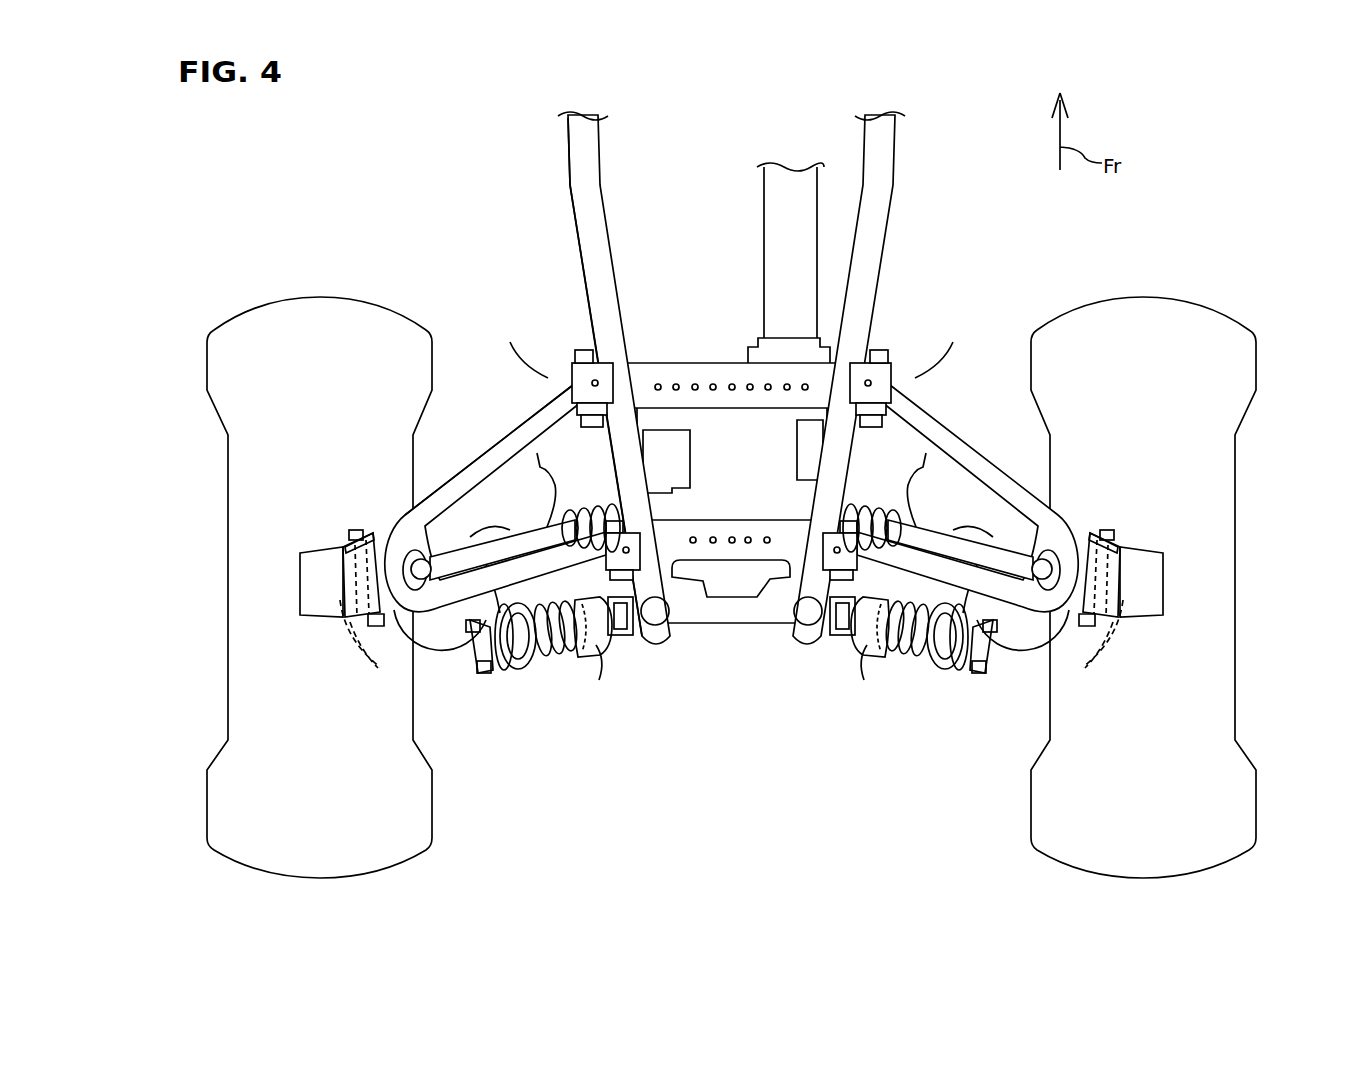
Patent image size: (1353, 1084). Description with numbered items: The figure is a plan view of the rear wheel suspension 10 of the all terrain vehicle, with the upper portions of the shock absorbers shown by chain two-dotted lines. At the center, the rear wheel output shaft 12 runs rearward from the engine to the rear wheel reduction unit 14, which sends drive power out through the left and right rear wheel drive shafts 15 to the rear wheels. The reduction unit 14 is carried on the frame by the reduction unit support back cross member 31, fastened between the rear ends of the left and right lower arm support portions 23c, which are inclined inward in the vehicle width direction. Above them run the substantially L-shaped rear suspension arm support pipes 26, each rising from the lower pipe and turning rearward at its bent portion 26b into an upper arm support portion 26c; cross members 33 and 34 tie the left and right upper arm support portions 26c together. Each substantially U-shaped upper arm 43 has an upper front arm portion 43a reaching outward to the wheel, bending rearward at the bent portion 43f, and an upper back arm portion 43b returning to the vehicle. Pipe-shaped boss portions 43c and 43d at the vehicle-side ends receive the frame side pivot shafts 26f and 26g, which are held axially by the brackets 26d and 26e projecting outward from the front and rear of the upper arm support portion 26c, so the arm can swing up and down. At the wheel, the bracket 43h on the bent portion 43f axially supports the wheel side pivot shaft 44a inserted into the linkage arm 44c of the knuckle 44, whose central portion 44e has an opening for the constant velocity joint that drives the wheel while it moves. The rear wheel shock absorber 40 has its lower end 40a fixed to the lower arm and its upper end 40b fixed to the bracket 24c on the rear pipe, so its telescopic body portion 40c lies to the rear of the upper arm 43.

The front suspension 10 is at (344, 231).
The rear wheel output shaft 12 is at (822, 196).
The rear wheel reduction unit 14 is at (810, 350).
The rear wheel drive shaft 15 is at (512, 670).
The lower arm support portion 23c is at (663, 653).
The bracket 24c is at (637, 647).
The rear suspension arm support pipe 26 is at (535, 378).
The bent portion 26b is at (572, 175).
The upper arm support portion 26c is at (588, 258).
The bracket 26d is at (592, 352).
The bracket 26e is at (628, 503).
The frame side pivot shaft 26f is at (572, 385).
The frame side pivot shaft 26g is at (587, 514).
The reduction unit support back cross member 31 is at (755, 625).
The cross member 33 is at (815, 377).
The cross member 34 is at (705, 600).
The rear wheel shock absorber 40 is at (542, 686).
The lower end 40a is at (480, 653).
The upper end 40b is at (623, 647).
The body portion 40c is at (527, 670).
The upper arm 43 is at (495, 540).
The upper front arm portion 43a is at (503, 450).
The upper back arm portion 43b is at (477, 653).
The pipe-shaped boss portion 43c is at (575, 380).
The pipe-shaped boss portion 43d is at (607, 653).
The bent portion 43f is at (383, 533).
The bracket 43h is at (362, 537).
The knuckle 44 is at (284, 608).
The wheel side pivot shaft 44a is at (350, 625).
The linkage arm 44c is at (345, 567).
The central portion 44e is at (300, 593).